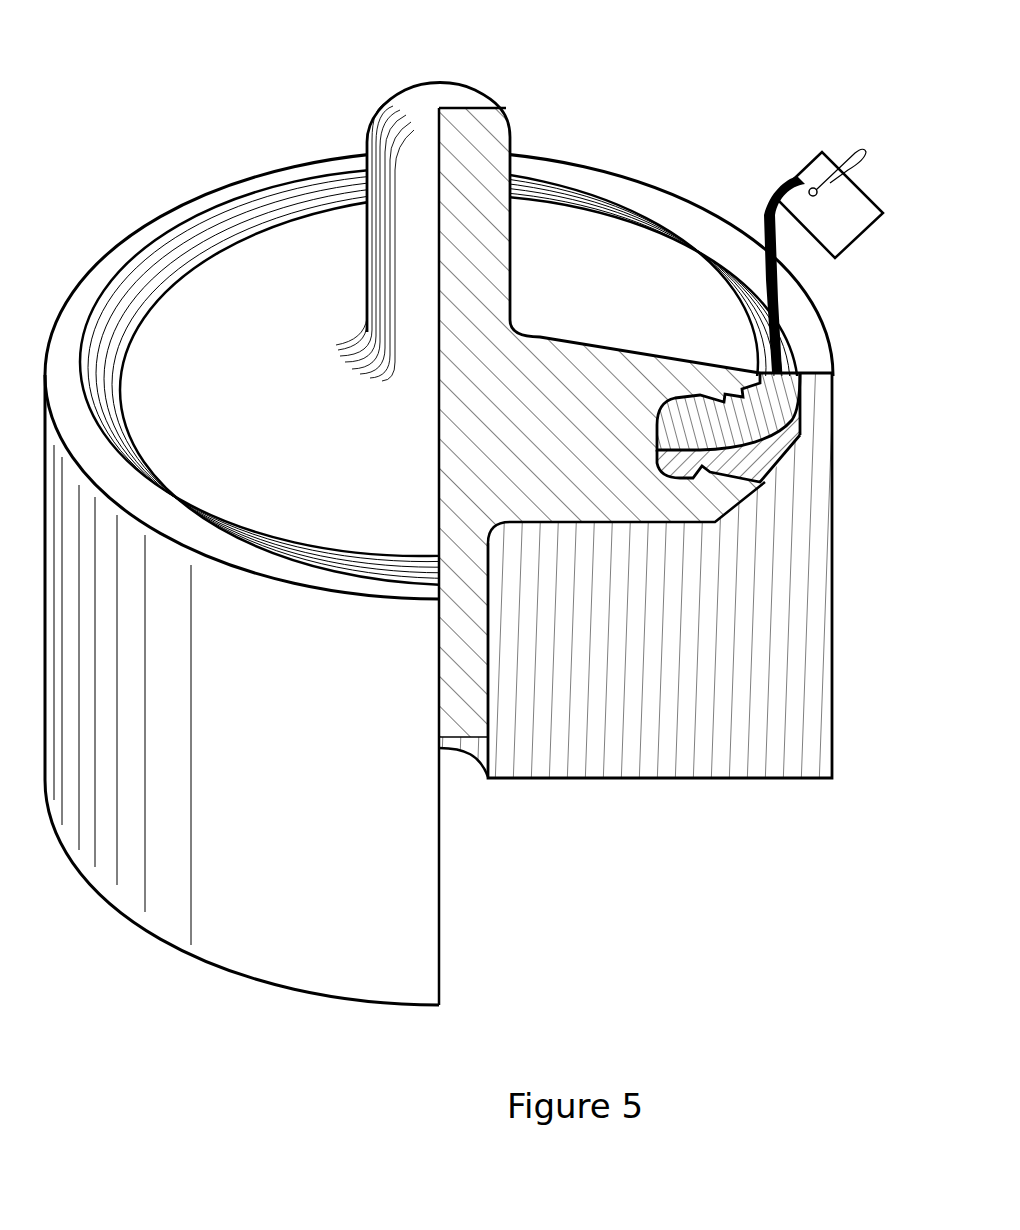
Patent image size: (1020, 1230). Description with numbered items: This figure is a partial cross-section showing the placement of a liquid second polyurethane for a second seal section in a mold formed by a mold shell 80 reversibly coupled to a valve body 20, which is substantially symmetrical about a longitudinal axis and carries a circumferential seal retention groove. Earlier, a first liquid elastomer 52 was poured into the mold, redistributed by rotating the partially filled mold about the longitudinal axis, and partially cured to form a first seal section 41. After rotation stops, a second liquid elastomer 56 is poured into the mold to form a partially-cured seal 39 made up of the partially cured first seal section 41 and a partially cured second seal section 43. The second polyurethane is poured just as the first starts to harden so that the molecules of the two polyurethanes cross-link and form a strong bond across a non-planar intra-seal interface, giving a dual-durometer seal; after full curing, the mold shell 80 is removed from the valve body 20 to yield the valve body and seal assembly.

The valve body 20 is at (506, 432).
The partially-cured seal 39 is at (727, 180).
The first seal section 41 is at (808, 413).
The second seal section 43 is at (780, 373).
The first liquid elastomer 52 is at (734, 475).
The second liquid elastomer 56 is at (696, 439).
The mold shell 80 is at (656, 639).